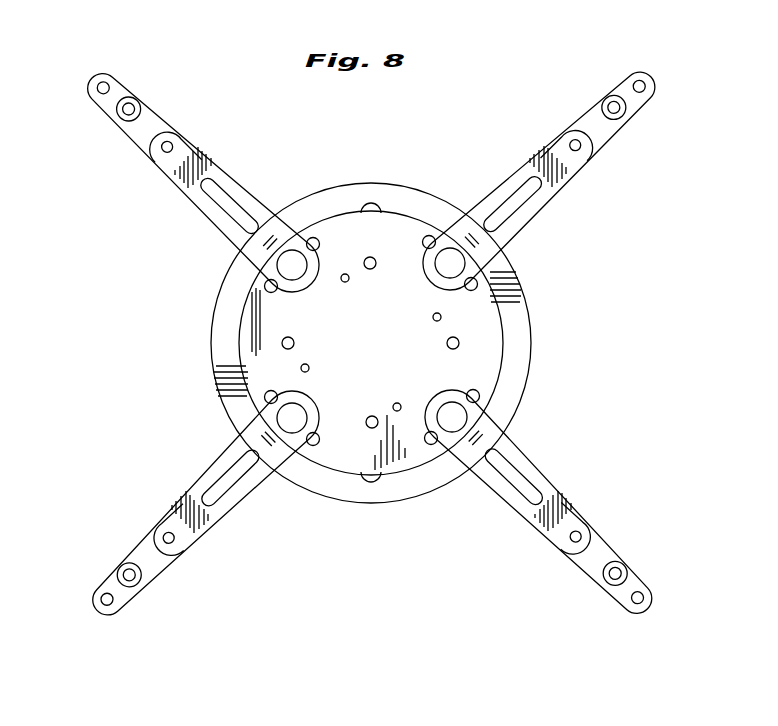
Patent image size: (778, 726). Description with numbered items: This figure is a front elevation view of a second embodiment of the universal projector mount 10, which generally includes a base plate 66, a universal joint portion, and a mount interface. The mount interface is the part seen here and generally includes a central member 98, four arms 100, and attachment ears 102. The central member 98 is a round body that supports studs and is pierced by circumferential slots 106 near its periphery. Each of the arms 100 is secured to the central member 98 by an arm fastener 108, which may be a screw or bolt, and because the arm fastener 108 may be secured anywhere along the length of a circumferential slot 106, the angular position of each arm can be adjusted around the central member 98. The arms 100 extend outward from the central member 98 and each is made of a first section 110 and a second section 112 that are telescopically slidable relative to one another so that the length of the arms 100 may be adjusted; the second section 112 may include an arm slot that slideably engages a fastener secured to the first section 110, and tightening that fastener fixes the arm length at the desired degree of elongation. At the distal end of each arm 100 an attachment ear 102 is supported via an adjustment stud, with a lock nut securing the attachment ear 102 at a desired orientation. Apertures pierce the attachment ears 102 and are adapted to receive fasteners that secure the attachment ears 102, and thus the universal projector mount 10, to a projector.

The universal projector mount 10 is at (361, 108).
The base plate 66 is at (393, 493).
The central member 98 is at (262, 328).
The arms 100 is at (172, 175).
The attachment ears 102 is at (122, 88).
The circumferential slots 106 is at (315, 238).
The arm fastener 108 is at (280, 268).
The first section 110 is at (243, 192).
The second section 112 is at (170, 124).